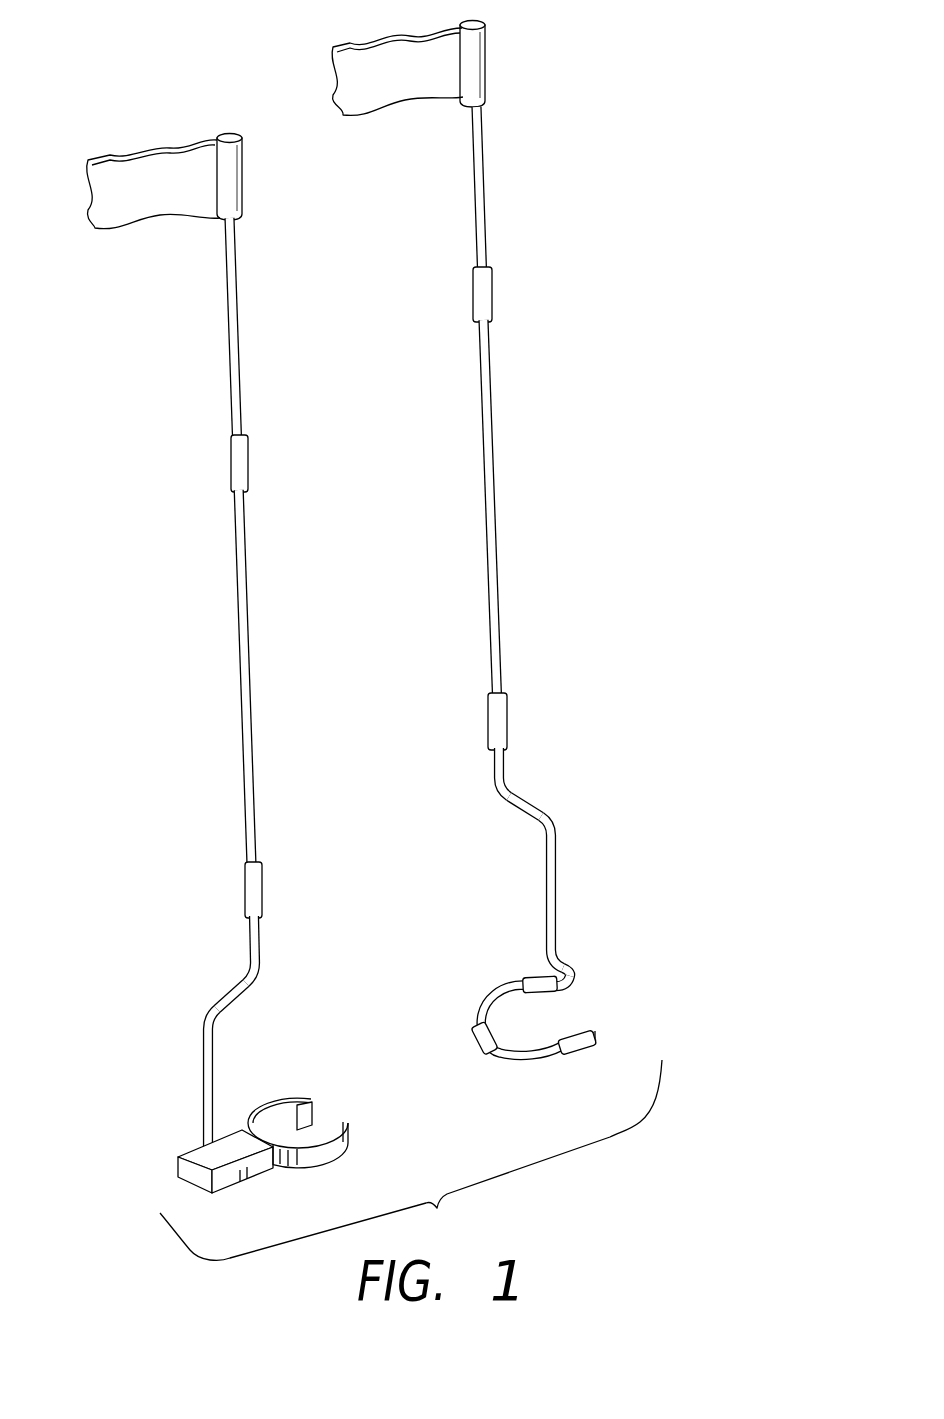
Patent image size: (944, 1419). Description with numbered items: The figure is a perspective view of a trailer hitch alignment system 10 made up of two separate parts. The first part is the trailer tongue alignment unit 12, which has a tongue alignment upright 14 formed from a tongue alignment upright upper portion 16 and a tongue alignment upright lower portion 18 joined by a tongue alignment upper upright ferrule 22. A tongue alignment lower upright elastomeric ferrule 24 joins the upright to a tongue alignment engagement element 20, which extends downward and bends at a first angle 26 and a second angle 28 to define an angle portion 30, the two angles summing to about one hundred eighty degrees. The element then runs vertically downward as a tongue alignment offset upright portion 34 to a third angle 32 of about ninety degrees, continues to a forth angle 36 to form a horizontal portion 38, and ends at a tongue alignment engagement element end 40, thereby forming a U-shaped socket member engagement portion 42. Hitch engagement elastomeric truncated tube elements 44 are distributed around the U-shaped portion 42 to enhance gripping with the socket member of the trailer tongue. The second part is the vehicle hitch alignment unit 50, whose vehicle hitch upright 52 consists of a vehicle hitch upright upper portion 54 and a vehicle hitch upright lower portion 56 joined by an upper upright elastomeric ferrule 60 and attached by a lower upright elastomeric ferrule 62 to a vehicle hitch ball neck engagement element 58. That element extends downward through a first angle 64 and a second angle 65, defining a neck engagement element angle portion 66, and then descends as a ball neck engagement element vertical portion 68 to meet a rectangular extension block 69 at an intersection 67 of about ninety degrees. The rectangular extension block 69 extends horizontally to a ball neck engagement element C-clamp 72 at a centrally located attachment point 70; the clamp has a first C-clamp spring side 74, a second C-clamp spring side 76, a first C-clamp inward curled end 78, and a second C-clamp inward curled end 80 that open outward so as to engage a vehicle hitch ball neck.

The trailer hitch alignment system 10 is at (252, 90).
The trailer tongue alignment unit 12 is at (483, 197).
The tongue alignment upright 14 is at (485, 230).
The tongue alignment upright upper portion 16 is at (477, 250).
The tongue alignment upright lower portion 18 is at (483, 420).
The tongue alignment engagement element 20 is at (552, 890).
The tongue alignment upper upright ferrule 22 is at (492, 290).
The tongue alignment lower upright elastomeric ferrule 24 is at (507, 715).
The first angle 26 is at (493, 792).
The second angle 28 is at (552, 823).
The angle portion 30 is at (523, 800).
The third angle 32 is at (552, 950).
The tongue alignment offset upright portion 34 is at (555, 872).
The forth angle 36 is at (573, 980).
The horizontal portion 38 is at (565, 955).
The tongue alignment engagement element end 40 is at (595, 1035).
The U-shaped socket member engagement portion 42 is at (537, 1057).
The hitch engagement elastomeric truncated tube elements 44 is at (523, 982).
The vehicle hitch alignment unit 50 is at (230, 272).
The vehicle hitch upright 52 is at (240, 310).
The vehicle hitch upright upper portion 54 is at (233, 373).
The vehicle hitch upright lower portion 56 is at (252, 617).
The vehicle hitch ball neck engagement element 58 is at (237, 993).
The upper upright elastomeric ferrule 60 is at (238, 458).
The lower upright elastomeric ferrule 62 is at (245, 872).
The first angle 64 is at (247, 977).
The second angle 65 is at (207, 1020).
The neck engagement element angle portion 66 is at (227, 998).
The intersection 67 is at (178, 1163).
The ball neck engagement element vertical portion 68 is at (207, 1080).
The rectangular extension block 69 is at (240, 1185).
The attachment point 70 is at (272, 1128).
The ball neck engagement element C-clamp 72 is at (348, 1150).
The first C-clamp spring side 74 is at (308, 1165).
The second C-clamp spring side 76 is at (270, 1113).
The first C-clamp inward curled end 78 is at (348, 1122).
The second C-clamp inward curled end 80 is at (318, 1117).